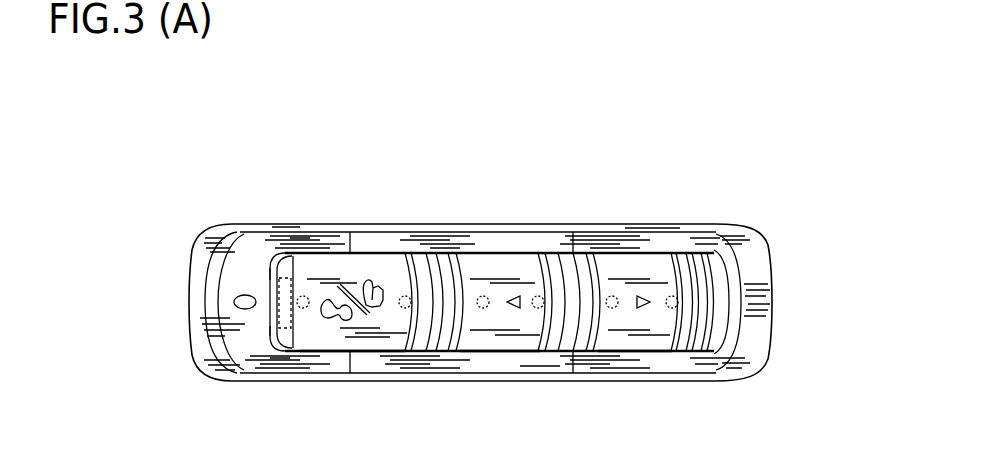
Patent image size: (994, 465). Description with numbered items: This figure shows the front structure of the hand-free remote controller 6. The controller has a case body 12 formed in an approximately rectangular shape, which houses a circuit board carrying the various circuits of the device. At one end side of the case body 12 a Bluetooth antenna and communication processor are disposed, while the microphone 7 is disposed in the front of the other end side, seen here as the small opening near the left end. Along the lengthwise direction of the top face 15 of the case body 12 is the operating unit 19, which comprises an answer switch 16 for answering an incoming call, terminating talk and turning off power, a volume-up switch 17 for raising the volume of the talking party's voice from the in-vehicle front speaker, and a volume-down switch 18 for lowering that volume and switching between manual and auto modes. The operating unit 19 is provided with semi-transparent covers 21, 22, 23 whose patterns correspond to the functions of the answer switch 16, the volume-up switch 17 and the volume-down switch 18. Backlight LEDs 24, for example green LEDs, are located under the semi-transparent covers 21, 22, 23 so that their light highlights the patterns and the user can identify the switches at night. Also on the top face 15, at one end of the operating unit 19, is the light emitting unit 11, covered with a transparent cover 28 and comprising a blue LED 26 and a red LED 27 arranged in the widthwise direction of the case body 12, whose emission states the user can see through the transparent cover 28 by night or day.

The hand-free remote controller 6 is at (194, 201).
The microphone 7 is at (232, 304).
The light emitting unit 11 is at (294, 272).
The case body 12 is at (765, 252).
The top face 15 is at (753, 350).
The answer switch 16 is at (373, 268).
The volume-up switch 17 is at (502, 272).
The volume-down switch 18 is at (633, 272).
The operating unit 19 is at (365, 162).
The semi-transparent cover 21 is at (366, 338).
The semi-transparent cover 22 is at (510, 340).
The semi-transparent cover 23 is at (632, 340).
The backlight LED 24 is at (688, 270).
The blue LED 26 is at (278, 252).
The red LED 27 is at (297, 352).
The transparent cover 28 is at (278, 302).